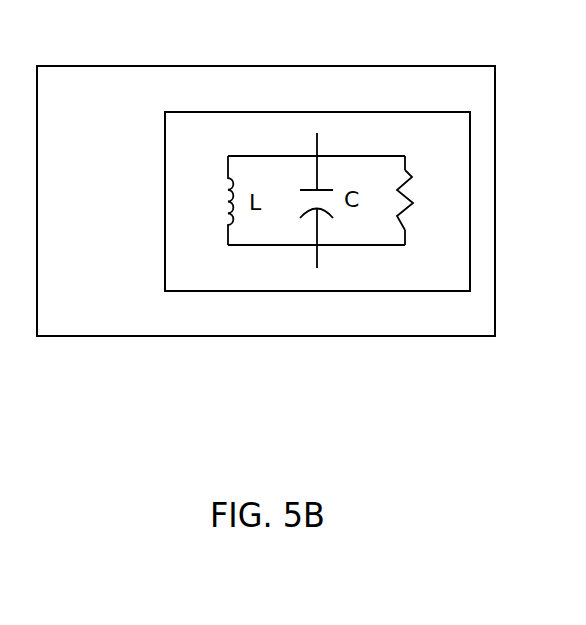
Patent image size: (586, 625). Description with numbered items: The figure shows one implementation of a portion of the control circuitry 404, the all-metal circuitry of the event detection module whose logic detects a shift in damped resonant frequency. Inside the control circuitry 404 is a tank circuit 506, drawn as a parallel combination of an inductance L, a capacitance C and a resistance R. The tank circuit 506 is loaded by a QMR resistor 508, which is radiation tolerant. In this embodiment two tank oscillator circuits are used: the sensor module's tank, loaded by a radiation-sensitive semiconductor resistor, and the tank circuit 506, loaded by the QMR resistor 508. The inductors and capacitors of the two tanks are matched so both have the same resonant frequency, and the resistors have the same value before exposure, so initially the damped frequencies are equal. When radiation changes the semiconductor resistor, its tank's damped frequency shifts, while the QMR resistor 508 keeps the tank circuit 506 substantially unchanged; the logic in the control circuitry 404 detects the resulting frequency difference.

The control circuitry 404 is at (450, 66).
The tank circuit 506 is at (362, 112).
The QMR resistor 508 is at (412, 213).